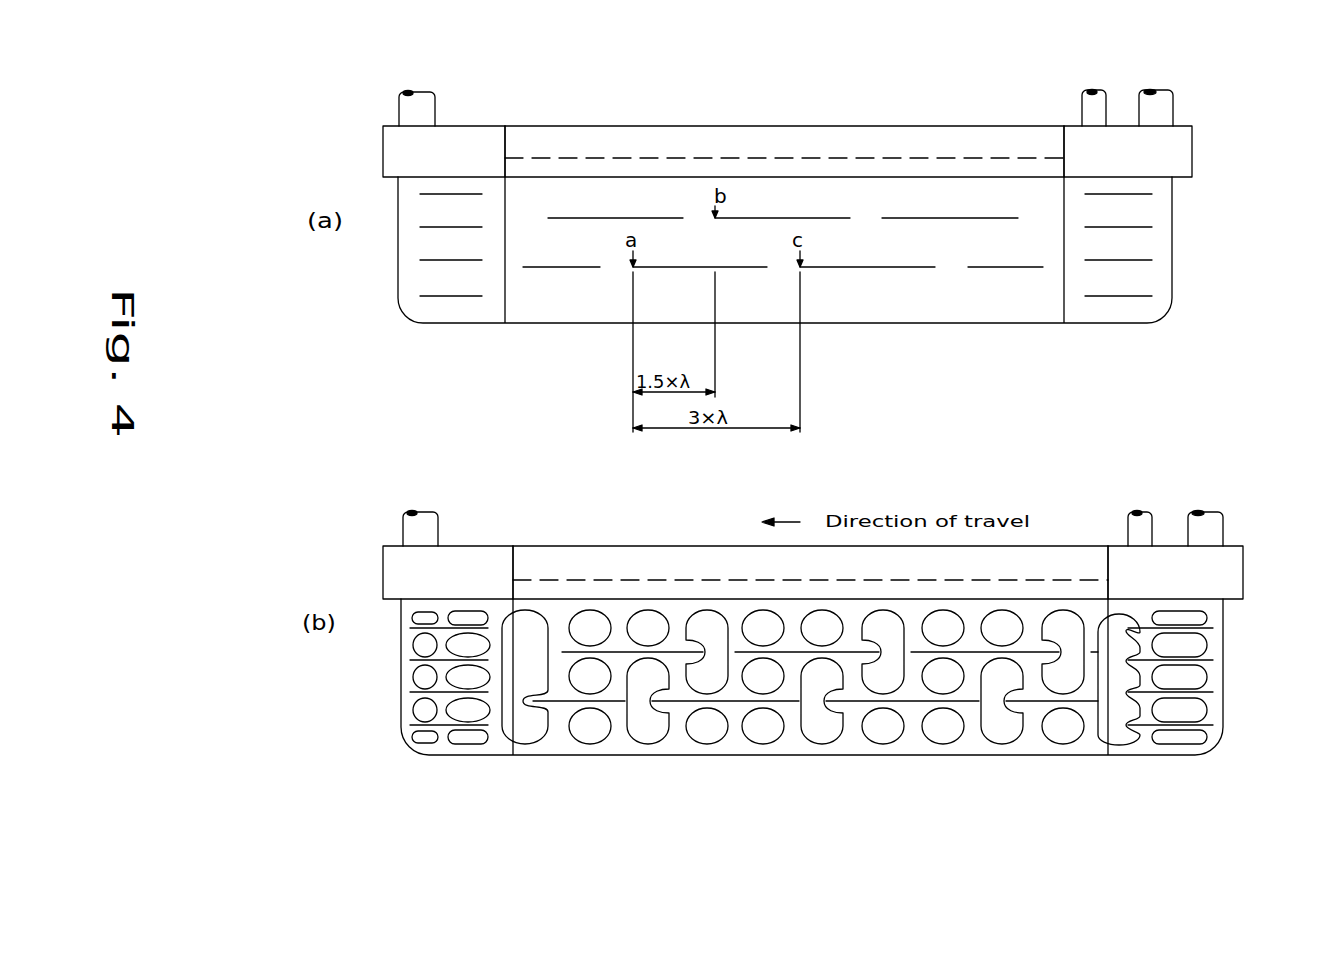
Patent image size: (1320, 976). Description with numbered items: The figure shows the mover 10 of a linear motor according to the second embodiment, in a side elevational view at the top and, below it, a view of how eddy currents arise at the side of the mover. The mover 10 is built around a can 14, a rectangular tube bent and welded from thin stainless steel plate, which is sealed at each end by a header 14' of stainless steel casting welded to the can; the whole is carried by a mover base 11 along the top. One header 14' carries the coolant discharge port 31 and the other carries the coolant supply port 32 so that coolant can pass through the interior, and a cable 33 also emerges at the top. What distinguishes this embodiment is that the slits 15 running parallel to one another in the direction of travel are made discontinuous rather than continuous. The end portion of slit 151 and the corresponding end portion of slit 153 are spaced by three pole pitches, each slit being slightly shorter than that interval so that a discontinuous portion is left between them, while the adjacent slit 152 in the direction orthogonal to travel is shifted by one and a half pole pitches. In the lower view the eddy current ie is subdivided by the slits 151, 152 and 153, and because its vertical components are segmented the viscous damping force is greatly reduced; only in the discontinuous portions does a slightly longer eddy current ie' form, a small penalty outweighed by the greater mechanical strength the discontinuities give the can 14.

The mover 10 is at (654, 113).
The mover base 11 is at (570, 137).
The can 14 is at (800, 524).
The header 14' is at (819, 469).
The slit 15 is at (448, 296).
The coolant discharge port 31 is at (413, 110).
The coolant supply port 32 is at (1163, 110).
The cable 33 is at (1092, 105).
The slit 151 is at (745, 268).
The slit 152 is at (780, 219).
The slit 153 is at (882, 268).
The eddy current ie is at (590, 709).
The eddy current ie' is at (653, 709).